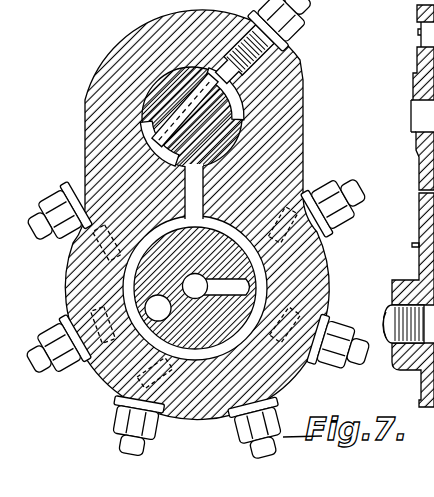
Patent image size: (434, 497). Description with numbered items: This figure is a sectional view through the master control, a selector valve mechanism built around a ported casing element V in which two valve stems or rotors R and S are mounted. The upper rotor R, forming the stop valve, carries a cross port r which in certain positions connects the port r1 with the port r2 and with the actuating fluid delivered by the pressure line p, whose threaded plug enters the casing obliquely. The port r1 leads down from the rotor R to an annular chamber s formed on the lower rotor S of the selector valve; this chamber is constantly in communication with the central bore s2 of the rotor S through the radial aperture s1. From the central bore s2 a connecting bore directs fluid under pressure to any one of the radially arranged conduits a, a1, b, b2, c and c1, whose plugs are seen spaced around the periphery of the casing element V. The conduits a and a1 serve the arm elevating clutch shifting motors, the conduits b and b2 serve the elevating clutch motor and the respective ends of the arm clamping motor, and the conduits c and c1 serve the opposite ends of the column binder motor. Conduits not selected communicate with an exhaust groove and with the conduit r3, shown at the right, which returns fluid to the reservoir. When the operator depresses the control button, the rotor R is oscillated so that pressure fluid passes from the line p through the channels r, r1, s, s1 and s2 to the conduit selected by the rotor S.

The ported casing element V is at (97, 50).
The rotor R is at (150, 102).
The cross port r is at (213, 108).
The port r1 is at (197, 182).
The port r2 is at (237, 80).
The conduit r3 is at (391, 305).
The rotor S is at (256, 268).
The annular chamber s is at (126, 272).
The radial aperture s1 is at (244, 288).
The central bore s2 is at (190, 288).
The pressure line p is at (317, 10).
The conduit a is at (360, 197).
The conduit a1 is at (363, 363).
The conduit b is at (260, 470).
The conduit b2 is at (132, 468).
The conduit c is at (35, 372).
The conduit c1 is at (44, 188).